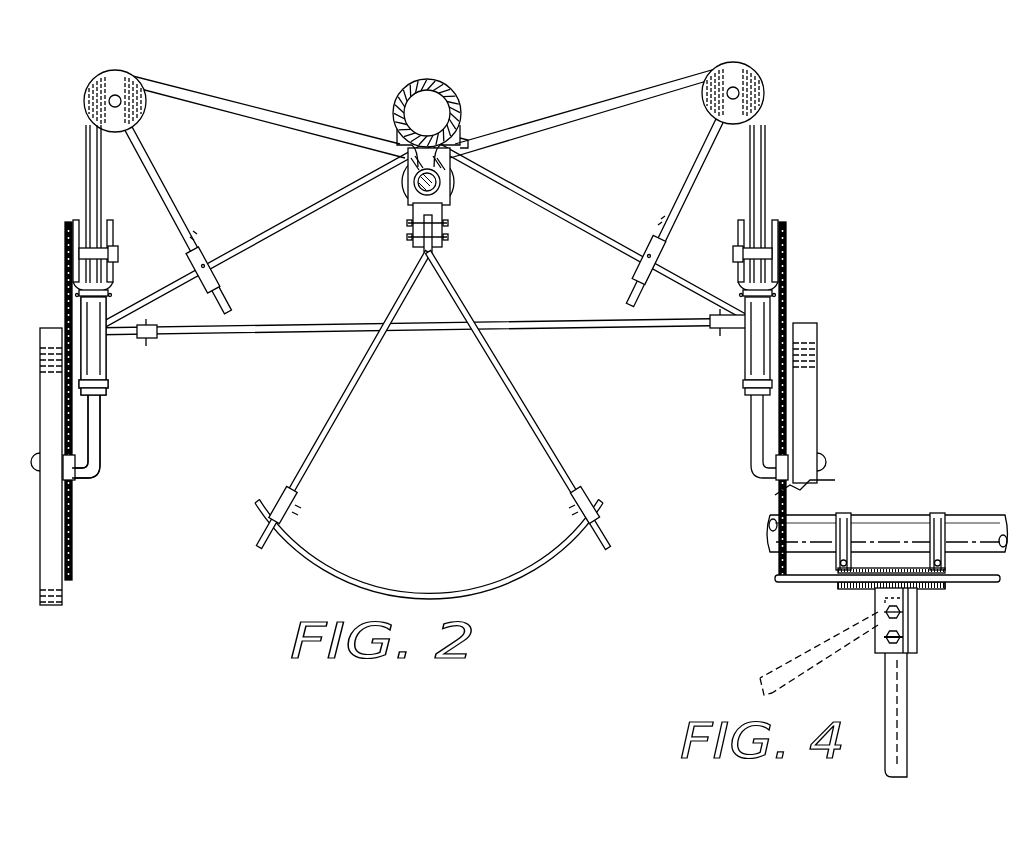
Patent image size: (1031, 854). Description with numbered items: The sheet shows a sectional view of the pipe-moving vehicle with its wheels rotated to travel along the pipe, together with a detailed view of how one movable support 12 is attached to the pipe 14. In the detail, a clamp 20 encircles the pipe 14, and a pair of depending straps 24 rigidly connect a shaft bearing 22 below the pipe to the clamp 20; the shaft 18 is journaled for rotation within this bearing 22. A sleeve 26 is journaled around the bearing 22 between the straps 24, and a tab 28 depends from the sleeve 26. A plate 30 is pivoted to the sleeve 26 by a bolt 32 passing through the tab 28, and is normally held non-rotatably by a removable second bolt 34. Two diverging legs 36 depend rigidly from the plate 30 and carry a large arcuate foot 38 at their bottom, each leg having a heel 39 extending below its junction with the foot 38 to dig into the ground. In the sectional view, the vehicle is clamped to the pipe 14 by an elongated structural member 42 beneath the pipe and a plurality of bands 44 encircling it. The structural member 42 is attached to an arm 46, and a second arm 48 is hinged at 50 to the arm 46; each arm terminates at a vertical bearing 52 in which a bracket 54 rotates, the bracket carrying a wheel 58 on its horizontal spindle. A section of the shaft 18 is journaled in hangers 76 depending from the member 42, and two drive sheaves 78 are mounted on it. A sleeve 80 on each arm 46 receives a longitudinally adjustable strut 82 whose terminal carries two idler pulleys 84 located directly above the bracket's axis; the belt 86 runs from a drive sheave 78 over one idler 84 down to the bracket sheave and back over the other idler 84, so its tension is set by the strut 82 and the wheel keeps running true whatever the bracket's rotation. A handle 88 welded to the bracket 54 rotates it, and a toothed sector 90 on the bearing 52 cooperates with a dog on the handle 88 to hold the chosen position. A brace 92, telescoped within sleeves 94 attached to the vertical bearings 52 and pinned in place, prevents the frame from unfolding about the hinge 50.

In FIG. 4, the movable support 12 is at (967, 706).
In FIG. 2, the pipe 14 is at (396, 107).
In FIG. 4, the pipe 14 is at (897, 515).
In FIG. 4, the shaft 18 is at (790, 583).
In FIG. 4, the clamp 20 is at (942, 514).
In FIG. 4, the shaft bearing 22 is at (948, 585).
In FIG. 4, the depending straps 24 is at (948, 560).
In FIG. 4, the sleeve 26 is at (862, 590).
In FIG. 2, the tab 28 is at (445, 216).
In FIG. 4, the tab 28 is at (920, 637).
In FIG. 2, the plate 30 is at (445, 258).
In FIG. 2, the bolt 32 is at (410, 224).
In FIG. 4, the bolt 32 is at (900, 613).
In FIG. 2, the second bolt 34 is at (410, 238).
In FIG. 4, the second bolt 34 is at (885, 652).
In FIG. 2, the legs 36 is at (342, 400).
In FIG. 4, the legs 36 is at (758, 676).
In FIG. 2, the arcuate foot 38 is at (485, 580).
In FIG. 2, the heel 39 is at (258, 540).
In FIG. 2, the elongated structural member 42 is at (395, 129).
In FIG. 2, the bands 44 is at (432, 85).
In FIG. 2, the arm 46 is at (271, 244).
In FIG. 2, the arm 48 is at (600, 247).
In FIG. 2, the hinge 50 is at (469, 126).
In FIG. 2, the vertical bearing 52 is at (110, 352).
In FIG. 2, the bracket 54 is at (102, 440).
In FIG. 2, the wheel 58 is at (50, 330).
In FIG. 2, the hangers 76 is at (470, 162).
In FIG. 2, the drive sheaves 78 is at (455, 190).
In FIG. 2, the sleeve 80 is at (652, 283).
In FIG. 2, the strut 82 is at (170, 182).
In FIG. 2, the idler pulleys 84 is at (708, 115).
In FIG. 2, the belt 86 is at (640, 92).
In FIG. 2, the handle 88 is at (108, 392).
In FIG. 2, the toothed sector 90 is at (118, 382).
In FIG. 2, the brace 92 is at (268, 332).
In FIG. 2, the sleeve 94 is at (740, 332).